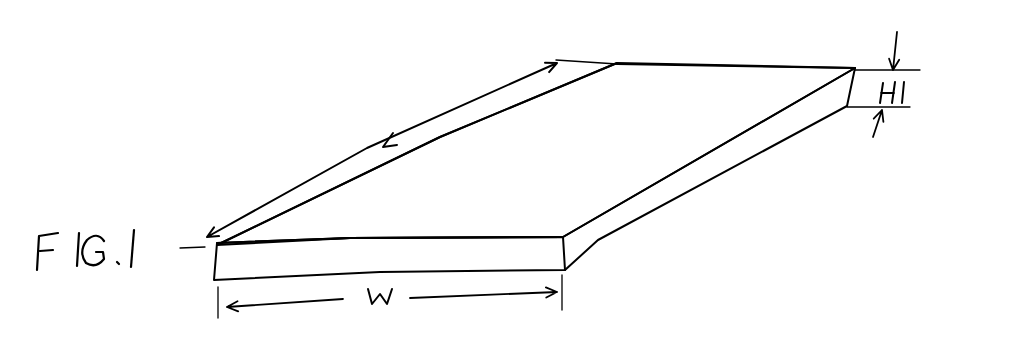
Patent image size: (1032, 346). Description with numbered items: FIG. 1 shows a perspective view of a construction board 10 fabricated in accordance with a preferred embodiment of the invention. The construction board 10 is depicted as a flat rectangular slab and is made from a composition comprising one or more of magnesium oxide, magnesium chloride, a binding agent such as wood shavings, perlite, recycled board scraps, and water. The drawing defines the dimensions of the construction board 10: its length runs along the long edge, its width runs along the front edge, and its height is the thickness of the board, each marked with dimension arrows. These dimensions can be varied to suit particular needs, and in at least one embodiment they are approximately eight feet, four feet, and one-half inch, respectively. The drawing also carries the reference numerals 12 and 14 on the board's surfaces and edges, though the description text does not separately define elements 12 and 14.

The construction board 10 is at (303, 107).
The major surfaces 12 is at (690, 118).
The side edges 14 is at (515, 124).